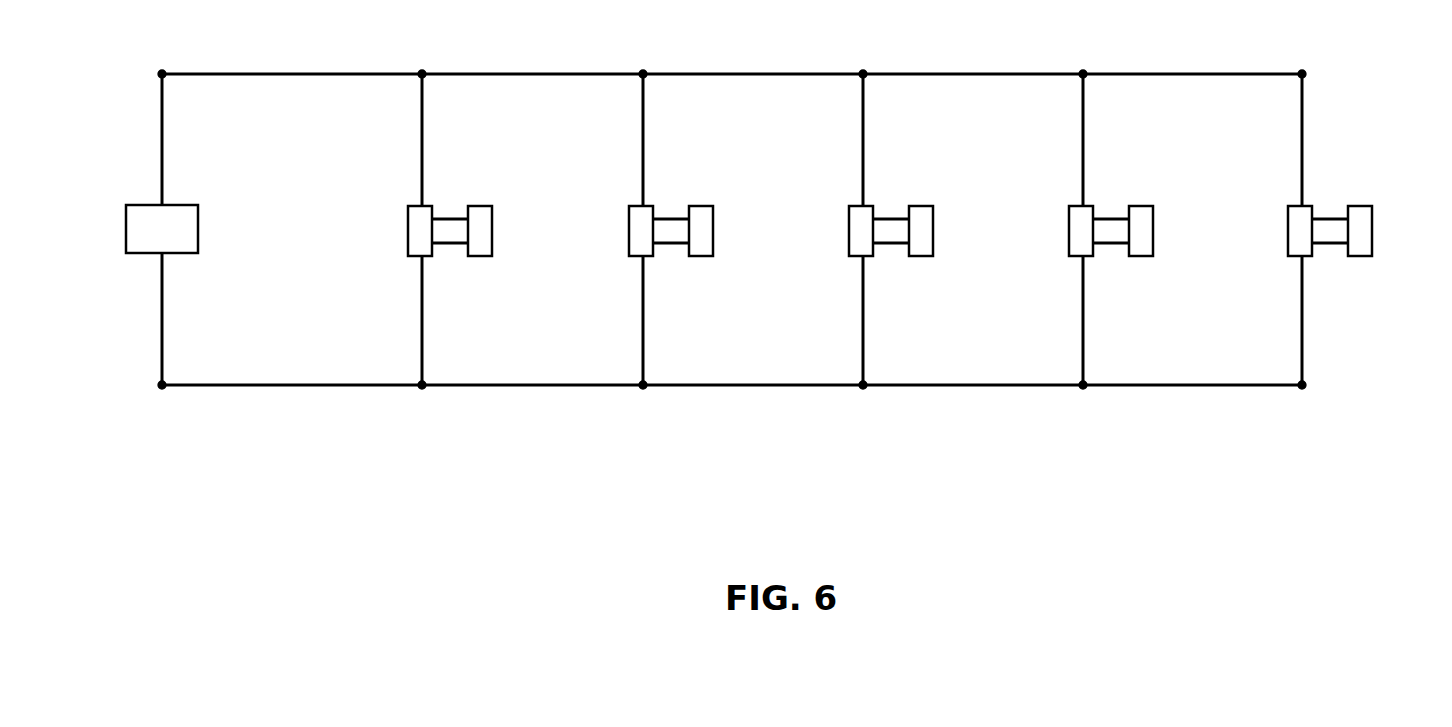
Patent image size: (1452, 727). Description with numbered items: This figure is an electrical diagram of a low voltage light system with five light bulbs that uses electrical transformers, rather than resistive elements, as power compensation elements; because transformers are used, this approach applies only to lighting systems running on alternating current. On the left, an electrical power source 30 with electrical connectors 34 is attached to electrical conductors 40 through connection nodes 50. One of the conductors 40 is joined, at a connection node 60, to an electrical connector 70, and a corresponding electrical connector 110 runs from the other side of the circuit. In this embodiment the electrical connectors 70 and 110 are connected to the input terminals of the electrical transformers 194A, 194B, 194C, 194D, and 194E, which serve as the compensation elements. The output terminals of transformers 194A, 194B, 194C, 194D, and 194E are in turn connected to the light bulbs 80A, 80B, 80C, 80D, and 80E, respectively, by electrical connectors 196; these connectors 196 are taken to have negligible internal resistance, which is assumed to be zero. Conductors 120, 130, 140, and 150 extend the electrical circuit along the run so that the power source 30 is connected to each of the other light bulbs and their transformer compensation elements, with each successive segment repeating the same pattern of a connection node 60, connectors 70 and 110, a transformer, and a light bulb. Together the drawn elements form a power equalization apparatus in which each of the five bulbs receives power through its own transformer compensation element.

The electrical power source 30 is at (185, 272).
The electrical connectors 34 is at (155, 134).
The electrical conductors 40 is at (287, 62).
The connection nodes 50 is at (158, 70).
The connection node 60 is at (430, 68).
The electrical connector 70 is at (413, 111).
The light bulb 80A is at (494, 260).
The light bulb 80B is at (715, 260).
The light bulb 80C is at (935, 260).
The light bulb 80D is at (1155, 260).
The light bulb 80E is at (1374, 260).
The electrical connector 110 is at (413, 342).
The conductors 120 is at (540, 63).
The conductors 130 is at (761, 63).
The conductors 140 is at (981, 63).
The conductors 150 is at (1201, 63).
The electrical transformer 194A is at (397, 231).
The electrical transformer 194B is at (618, 231).
The electrical transformer 194C is at (838, 231).
The electrical transformer 194D is at (1058, 231).
The electrical transformer 194E is at (1277, 231).
The electrical connectors 196 is at (452, 209).